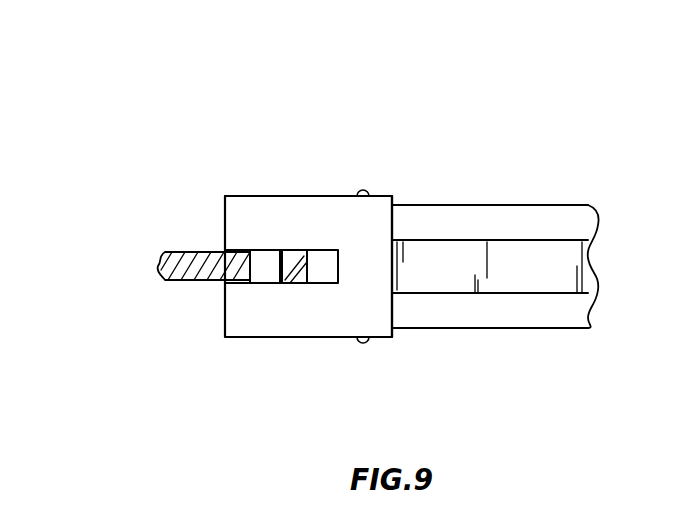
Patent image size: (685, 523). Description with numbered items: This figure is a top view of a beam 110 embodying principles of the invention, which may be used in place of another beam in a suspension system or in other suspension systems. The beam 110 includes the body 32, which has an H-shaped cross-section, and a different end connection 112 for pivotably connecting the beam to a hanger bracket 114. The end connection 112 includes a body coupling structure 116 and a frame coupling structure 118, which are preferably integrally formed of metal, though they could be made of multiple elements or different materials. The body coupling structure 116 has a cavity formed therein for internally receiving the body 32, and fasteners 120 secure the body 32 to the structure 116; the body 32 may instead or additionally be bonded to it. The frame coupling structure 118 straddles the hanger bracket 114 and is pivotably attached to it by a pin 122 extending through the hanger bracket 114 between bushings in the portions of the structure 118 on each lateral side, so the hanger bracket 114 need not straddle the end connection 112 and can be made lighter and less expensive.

The beam 110 is at (542, 135).
The end connection 112 is at (280, 340).
The hanger bracket 114 is at (193, 251).
The body coupling structure 116 is at (383, 195).
The frame coupling structure 118 is at (240, 195).
The fasteners 120 is at (362, 191).
The pin 122 is at (245, 262).
The body 32 is at (570, 203).